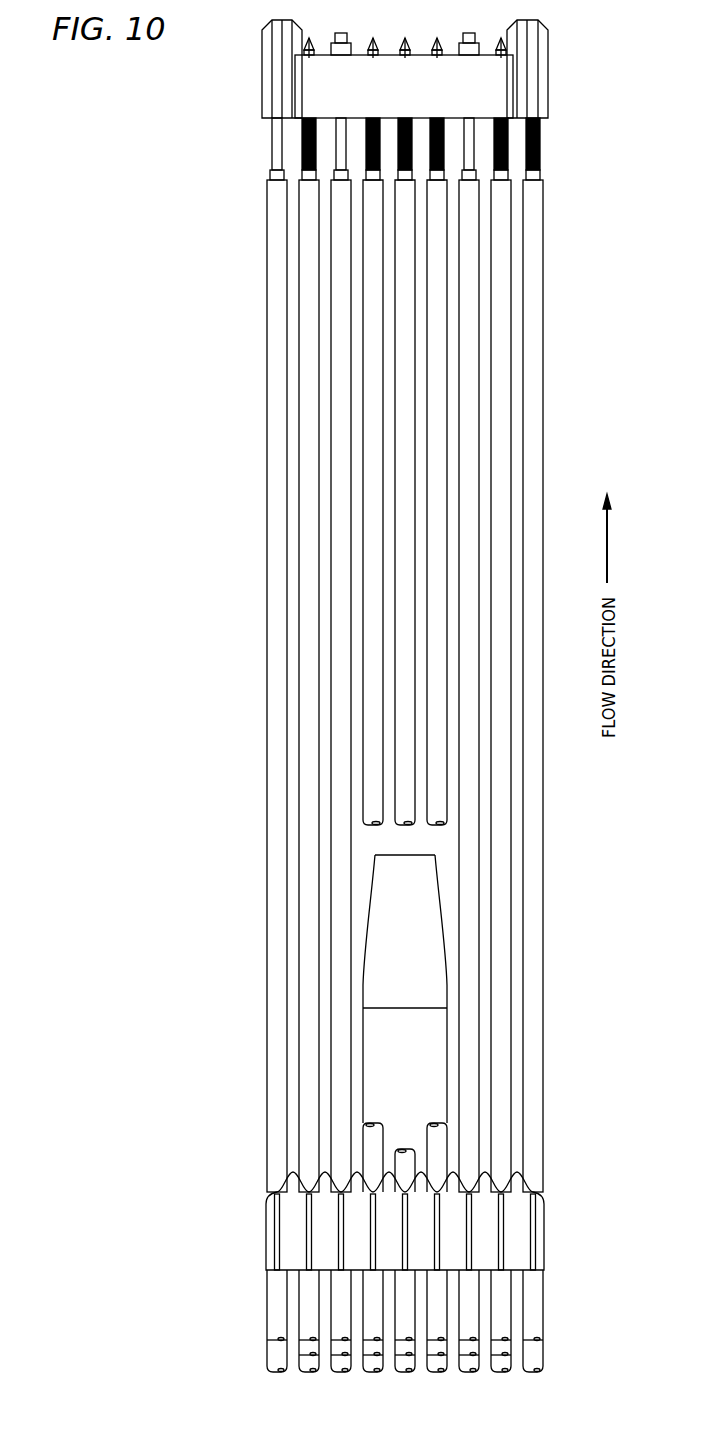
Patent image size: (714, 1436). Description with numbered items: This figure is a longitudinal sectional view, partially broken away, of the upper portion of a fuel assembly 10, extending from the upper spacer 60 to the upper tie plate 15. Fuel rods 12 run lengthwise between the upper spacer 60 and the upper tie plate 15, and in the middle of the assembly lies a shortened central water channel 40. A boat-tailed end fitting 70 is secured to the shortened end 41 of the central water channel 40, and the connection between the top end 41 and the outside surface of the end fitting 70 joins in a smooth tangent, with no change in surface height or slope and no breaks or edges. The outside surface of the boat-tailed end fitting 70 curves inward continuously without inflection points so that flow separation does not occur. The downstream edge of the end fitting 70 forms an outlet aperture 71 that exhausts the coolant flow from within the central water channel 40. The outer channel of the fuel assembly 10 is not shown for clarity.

The fuel assembly 10 is at (196, 626).
The fuel rod 12 is at (278, 327).
The upper tie plate 15 is at (546, 77).
The shortened central water channel 40 is at (447, 1053).
The shortened end 41 is at (427, 1032).
The upper spacer 60 is at (545, 1242).
The boat-tailed end fitting 70 is at (438, 878).
The aperture 71 is at (392, 855).